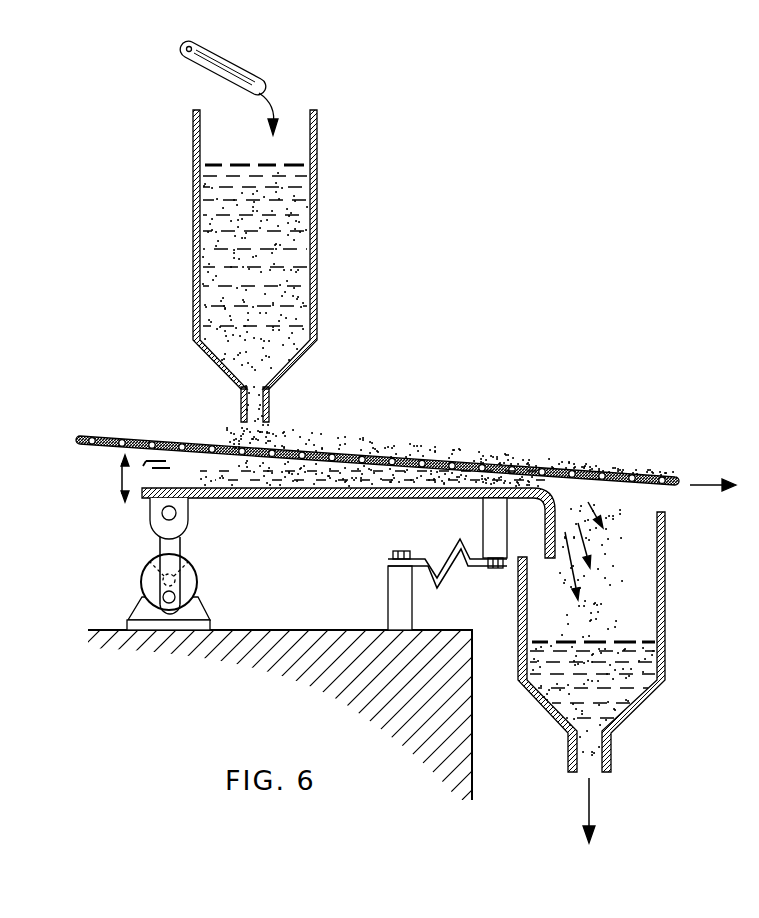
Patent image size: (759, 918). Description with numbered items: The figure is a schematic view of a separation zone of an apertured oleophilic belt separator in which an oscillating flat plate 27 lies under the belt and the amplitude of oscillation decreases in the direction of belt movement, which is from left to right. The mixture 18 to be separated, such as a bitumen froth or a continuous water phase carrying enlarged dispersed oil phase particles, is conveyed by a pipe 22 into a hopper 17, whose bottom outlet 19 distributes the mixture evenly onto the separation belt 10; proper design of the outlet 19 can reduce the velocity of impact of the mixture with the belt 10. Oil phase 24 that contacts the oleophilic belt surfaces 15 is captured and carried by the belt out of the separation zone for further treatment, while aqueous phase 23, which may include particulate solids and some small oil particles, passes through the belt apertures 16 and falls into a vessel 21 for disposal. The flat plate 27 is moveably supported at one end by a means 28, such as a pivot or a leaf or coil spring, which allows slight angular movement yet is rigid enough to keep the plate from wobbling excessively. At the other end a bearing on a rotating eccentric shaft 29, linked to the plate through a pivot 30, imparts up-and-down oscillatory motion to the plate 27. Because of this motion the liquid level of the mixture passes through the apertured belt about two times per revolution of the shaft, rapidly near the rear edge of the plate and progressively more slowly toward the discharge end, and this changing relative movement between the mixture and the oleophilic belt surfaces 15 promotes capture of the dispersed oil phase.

The separation belt 10 is at (203, 442).
The oleophilic belt surfaces 15 is at (127, 440).
The belt apertures 16 is at (103, 437).
The hopper 17 is at (194, 203).
The mixture 18 is at (302, 202).
The hopper outlet 19 is at (270, 408).
The vessel 21 is at (665, 612).
The pipe 22 is at (217, 52).
The aqueous phase 23 is at (598, 505).
The oil phase 24 is at (633, 468).
The oscillating flat plate 27 is at (332, 498).
The support means 28 is at (452, 550).
The rotating eccentric shaft 29 is at (194, 567).
The pivot 30 is at (162, 518).